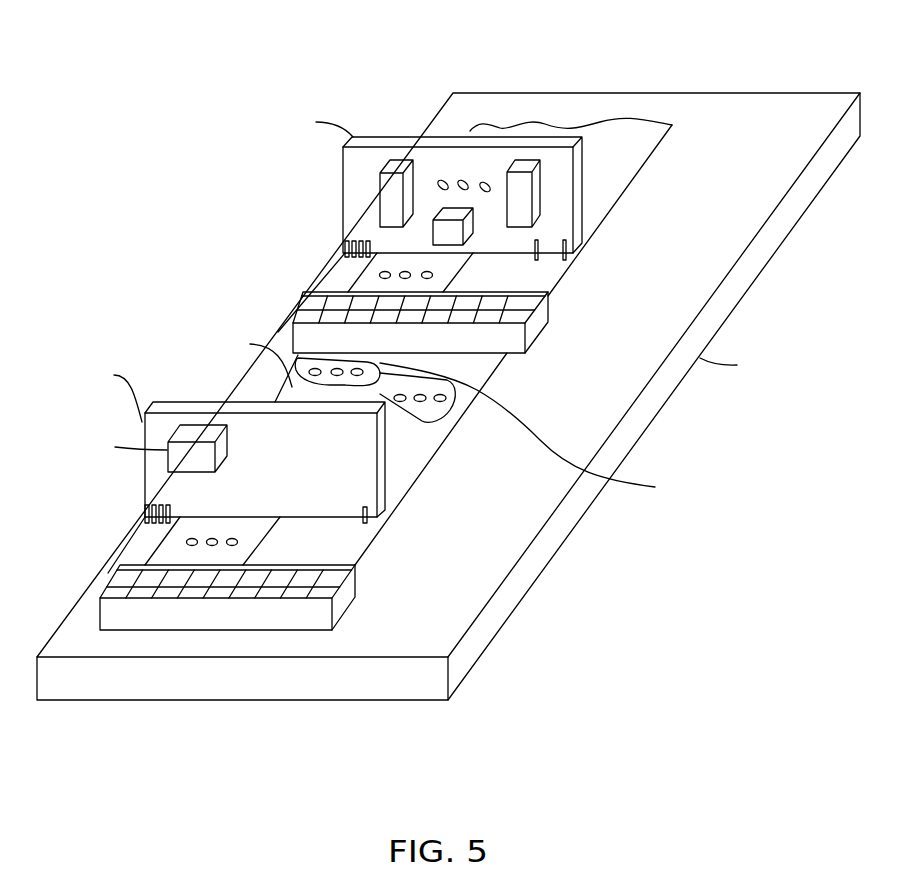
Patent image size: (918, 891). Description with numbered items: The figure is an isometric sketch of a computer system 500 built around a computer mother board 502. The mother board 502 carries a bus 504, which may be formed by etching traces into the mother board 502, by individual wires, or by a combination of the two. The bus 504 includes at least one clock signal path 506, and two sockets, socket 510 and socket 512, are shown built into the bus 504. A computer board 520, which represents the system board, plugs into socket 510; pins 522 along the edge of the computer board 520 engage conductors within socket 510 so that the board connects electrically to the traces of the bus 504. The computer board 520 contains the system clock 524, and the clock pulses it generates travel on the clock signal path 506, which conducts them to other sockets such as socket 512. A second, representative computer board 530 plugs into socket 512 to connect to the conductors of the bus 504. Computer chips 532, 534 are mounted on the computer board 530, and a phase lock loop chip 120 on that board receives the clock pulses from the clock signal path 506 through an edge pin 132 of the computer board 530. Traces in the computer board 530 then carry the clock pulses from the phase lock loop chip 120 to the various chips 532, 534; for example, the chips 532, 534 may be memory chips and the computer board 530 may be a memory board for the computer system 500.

The computer system 500 is at (439, 40).
The computer mother board 502 is at (750, 290).
The bus 504 is at (448, 414).
The clock signal path 506 is at (390, 356).
The socket 510 is at (353, 592).
The socket 512 is at (533, 333).
The computer board 520 is at (152, 402).
The pins 522 is at (145, 520).
The system clock 524 is at (173, 468).
The computer board 530 is at (393, 135).
The computer chip 532 is at (383, 202).
The computer chip 534 is at (518, 170).
The phase lock loop chip 120 is at (463, 243).
The edge pin 132 is at (357, 258).